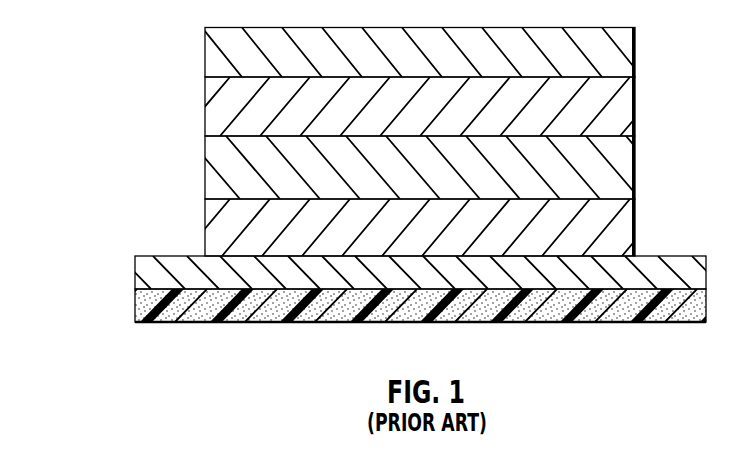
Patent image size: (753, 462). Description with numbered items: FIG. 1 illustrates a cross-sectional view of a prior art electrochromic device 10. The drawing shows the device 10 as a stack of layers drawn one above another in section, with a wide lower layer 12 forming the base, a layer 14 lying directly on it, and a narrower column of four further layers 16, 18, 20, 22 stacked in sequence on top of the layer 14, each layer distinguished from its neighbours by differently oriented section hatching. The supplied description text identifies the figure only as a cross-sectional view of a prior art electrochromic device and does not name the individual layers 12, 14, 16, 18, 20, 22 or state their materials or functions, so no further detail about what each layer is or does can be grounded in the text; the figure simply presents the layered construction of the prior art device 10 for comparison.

The prior art multilayer structure 10 is at (112, 143).
The substrate 12 is at (143, 300).
The base layer 14 is at (143, 270).
The first layer 16 is at (210, 228).
The second layer 18 is at (210, 170).
The third layer 20 is at (209, 110).
The top layer 22 is at (212, 55).